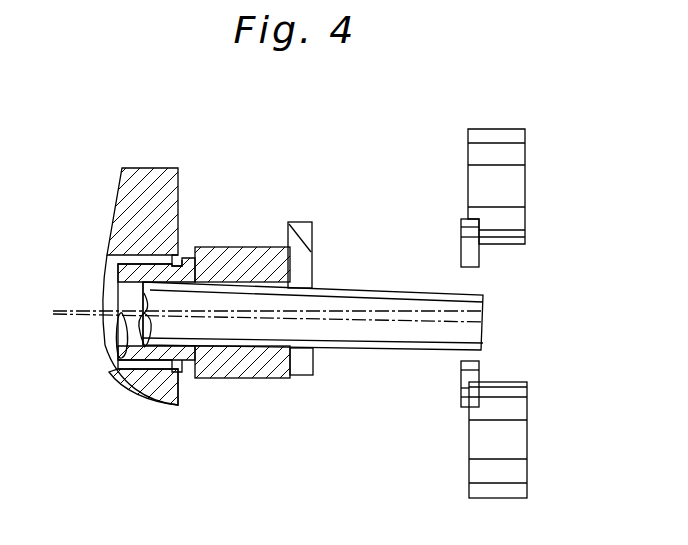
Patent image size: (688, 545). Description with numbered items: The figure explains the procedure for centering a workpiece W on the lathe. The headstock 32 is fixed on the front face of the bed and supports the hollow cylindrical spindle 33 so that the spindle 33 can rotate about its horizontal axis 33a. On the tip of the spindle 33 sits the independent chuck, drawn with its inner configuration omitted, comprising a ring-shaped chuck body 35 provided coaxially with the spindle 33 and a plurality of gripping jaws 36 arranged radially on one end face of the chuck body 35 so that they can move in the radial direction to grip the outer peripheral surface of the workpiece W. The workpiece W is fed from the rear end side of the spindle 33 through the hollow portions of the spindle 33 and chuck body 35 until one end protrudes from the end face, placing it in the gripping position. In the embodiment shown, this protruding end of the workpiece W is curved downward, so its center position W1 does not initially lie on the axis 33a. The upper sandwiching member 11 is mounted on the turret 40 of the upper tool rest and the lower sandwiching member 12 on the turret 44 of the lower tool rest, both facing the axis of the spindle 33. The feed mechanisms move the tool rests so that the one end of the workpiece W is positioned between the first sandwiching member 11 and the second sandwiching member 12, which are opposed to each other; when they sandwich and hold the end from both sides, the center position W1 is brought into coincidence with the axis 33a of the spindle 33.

The headstock 32 is at (152, 170).
The spindle 33 is at (184, 257).
The axis of the spindle 33a is at (65, 306).
The chuck body 35 is at (240, 248).
The gripping jaws 36 is at (307, 221).
The workpiece W is at (337, 290).
The center position of the one end of the workpiece W1 is at (483, 322).
The upper sandwiching member 11 is at (465, 250).
The lower sandwiching member 12 is at (465, 375).
The turret 40 is at (524, 182).
The turret 44 is at (522, 435).